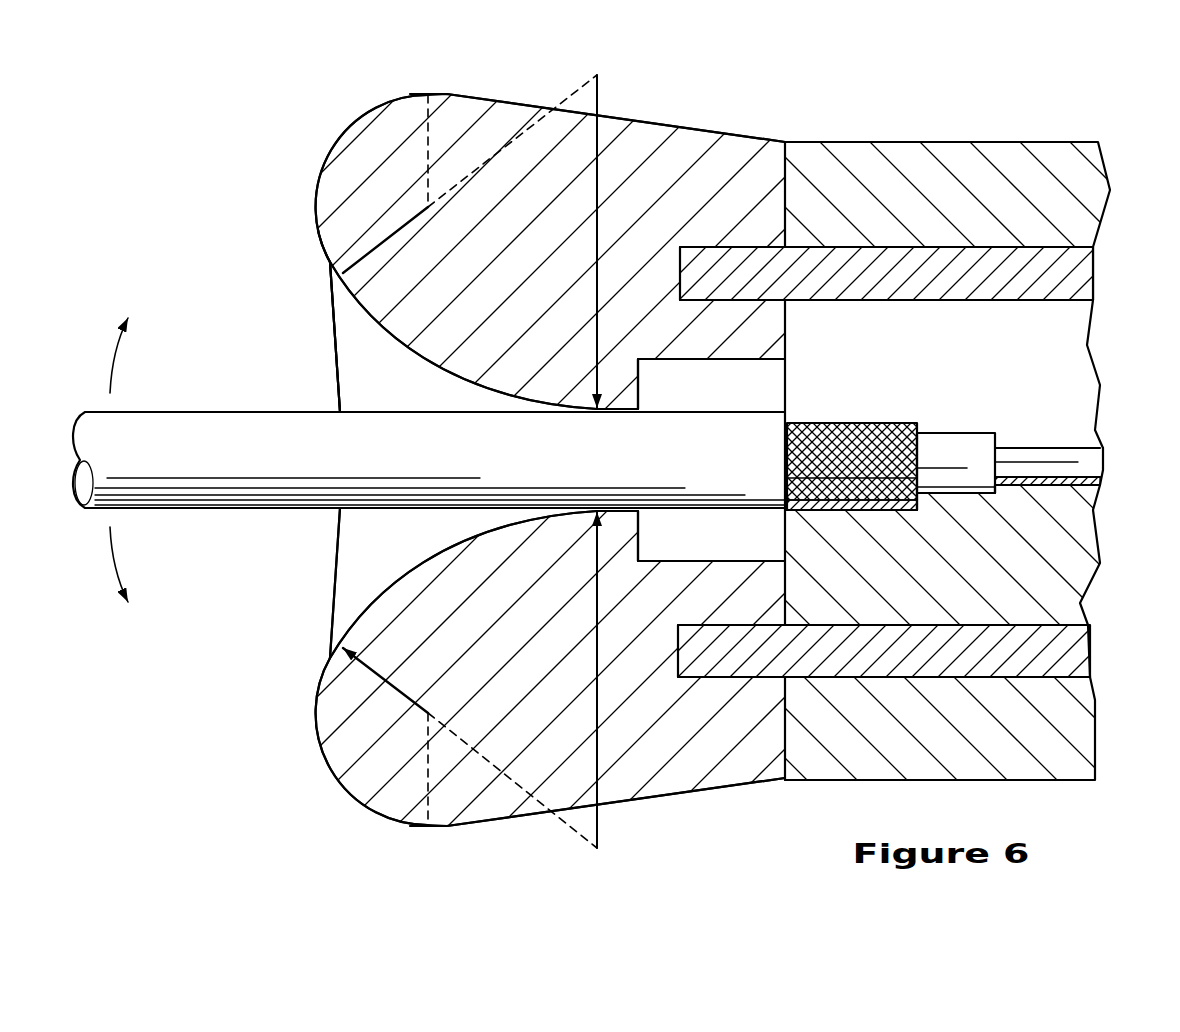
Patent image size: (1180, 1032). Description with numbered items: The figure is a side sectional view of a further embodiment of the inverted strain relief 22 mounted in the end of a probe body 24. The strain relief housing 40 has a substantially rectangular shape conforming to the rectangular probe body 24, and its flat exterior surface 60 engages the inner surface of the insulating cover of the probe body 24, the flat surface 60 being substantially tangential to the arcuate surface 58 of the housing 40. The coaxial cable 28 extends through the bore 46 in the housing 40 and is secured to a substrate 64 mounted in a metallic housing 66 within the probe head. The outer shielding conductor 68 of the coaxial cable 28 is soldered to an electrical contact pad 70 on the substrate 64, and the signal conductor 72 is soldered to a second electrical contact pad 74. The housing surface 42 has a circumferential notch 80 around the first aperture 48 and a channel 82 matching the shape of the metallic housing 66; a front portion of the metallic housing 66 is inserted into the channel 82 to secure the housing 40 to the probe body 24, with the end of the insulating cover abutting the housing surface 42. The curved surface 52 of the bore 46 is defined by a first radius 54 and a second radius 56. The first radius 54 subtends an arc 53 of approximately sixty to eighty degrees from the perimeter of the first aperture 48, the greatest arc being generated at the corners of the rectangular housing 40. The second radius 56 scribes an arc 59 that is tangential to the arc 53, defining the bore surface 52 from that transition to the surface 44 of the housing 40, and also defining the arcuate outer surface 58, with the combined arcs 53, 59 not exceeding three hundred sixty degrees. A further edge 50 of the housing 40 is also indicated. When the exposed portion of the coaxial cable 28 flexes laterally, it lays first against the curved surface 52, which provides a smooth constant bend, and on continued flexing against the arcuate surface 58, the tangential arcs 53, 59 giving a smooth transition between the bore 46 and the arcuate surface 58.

The inverted strain relief 22 is at (228, 165).
The probe body 24 is at (945, 142).
The coaxial cable 28 is at (190, 508).
The housing 40 is at (330, 618).
The housing surface 42 is at (790, 327).
The surface of the housing 44 is at (323, 197).
The bore 46 is at (370, 348).
The first aperture 48 is at (597, 508).
The jaw edge 50 is at (328, 268).
The curved surface 52 is at (372, 382).
The arc 53 is at (455, 387).
The first radius 54 is at (597, 75).
The second radius 56 is at (395, 240).
The arcuate surface 58 is at (323, 132).
The arc 59 is at (350, 123).
The flat surface 60 is at (680, 118).
The substrate 64 is at (1088, 527).
The metallic housing 66 is at (1093, 275).
The outer shielding conductor 68 is at (852, 423).
The electrical contact pad 70 is at (873, 510).
The signal conductor 72 is at (1050, 448).
The second electrical contact pad 74 is at (1033, 487).
The circumferential notch 80 is at (740, 360).
The channel 82 is at (735, 247).